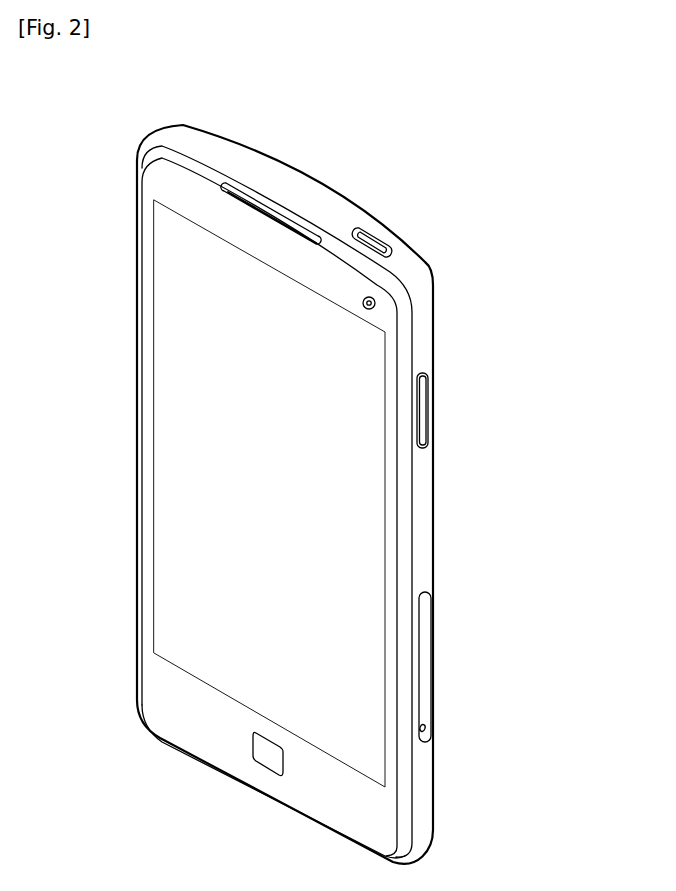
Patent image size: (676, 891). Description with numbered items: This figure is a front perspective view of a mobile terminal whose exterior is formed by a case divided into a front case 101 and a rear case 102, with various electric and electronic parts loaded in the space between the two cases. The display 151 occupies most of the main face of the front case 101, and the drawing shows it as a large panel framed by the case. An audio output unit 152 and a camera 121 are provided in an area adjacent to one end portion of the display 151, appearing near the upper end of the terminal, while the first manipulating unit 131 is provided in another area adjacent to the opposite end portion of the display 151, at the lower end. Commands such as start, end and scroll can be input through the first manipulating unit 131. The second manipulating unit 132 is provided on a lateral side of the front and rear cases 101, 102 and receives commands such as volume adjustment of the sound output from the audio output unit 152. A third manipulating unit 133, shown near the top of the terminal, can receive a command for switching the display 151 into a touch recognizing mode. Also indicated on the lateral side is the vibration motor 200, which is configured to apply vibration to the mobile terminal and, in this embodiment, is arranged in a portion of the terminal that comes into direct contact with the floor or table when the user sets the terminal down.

The front case 101 is at (402, 818).
The rear case 102 is at (423, 290).
The camera 121 is at (376, 303).
The first manipulating unit 131 is at (264, 760).
The second manipulating unit 132 is at (421, 412).
The third manipulating unit 133 is at (373, 240).
The display 151 is at (168, 465).
The audio output unit 152 is at (272, 210).
The vibration motor 200 is at (424, 670).